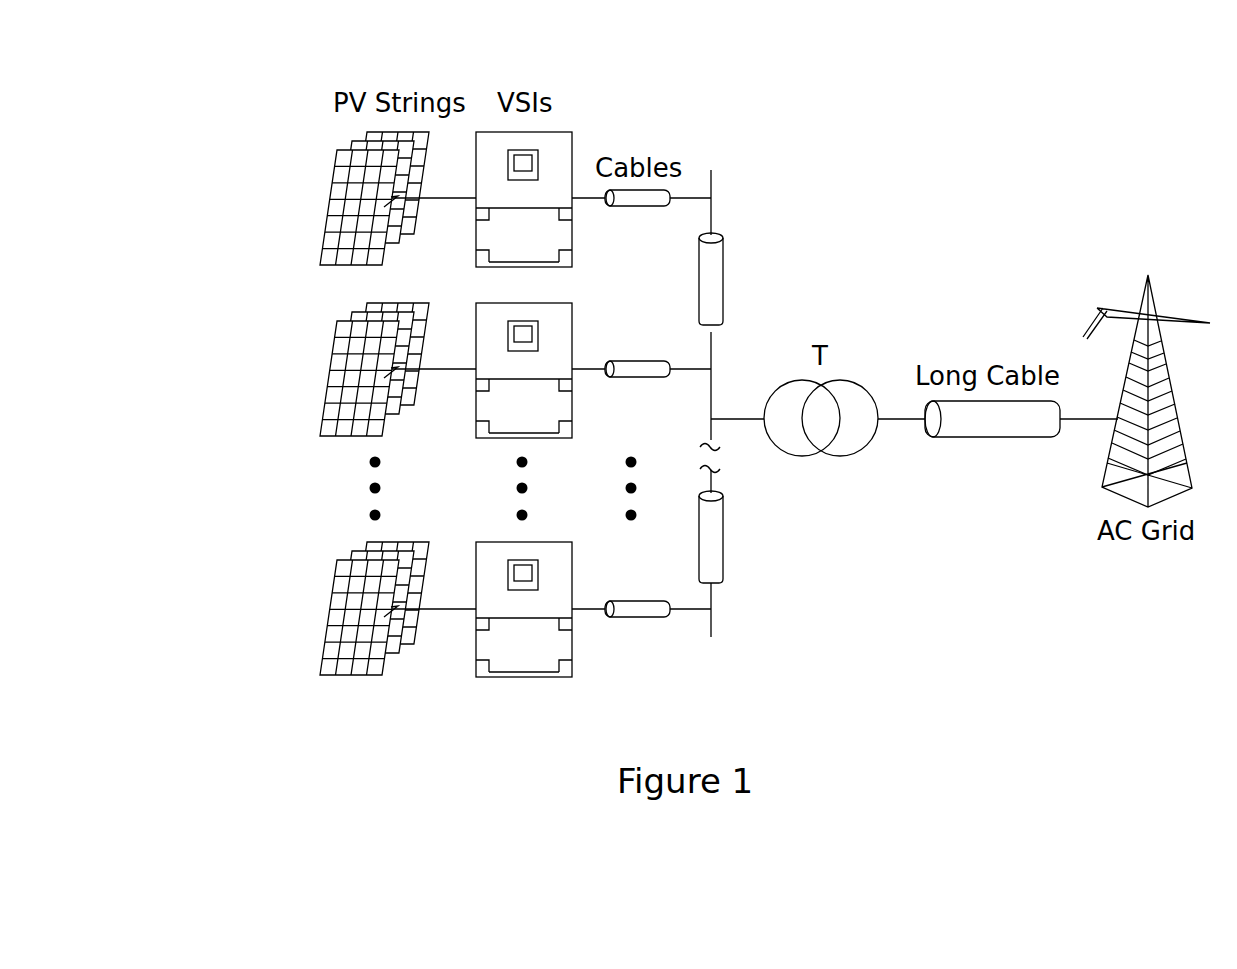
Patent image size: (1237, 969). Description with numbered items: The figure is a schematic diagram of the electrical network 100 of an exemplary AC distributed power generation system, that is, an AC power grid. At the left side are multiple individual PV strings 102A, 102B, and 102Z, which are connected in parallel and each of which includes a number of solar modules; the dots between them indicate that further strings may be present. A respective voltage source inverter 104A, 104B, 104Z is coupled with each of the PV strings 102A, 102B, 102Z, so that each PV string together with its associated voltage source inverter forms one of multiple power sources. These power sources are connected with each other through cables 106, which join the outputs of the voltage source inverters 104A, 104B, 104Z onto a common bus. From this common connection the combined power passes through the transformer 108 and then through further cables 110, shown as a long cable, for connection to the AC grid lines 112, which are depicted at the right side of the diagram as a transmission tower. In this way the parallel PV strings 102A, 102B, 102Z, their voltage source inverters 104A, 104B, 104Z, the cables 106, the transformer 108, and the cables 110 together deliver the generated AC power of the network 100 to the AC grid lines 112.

The network 100 is at (1037, 72).
The PV string 102A is at (278, 198).
The PV string 102B is at (277, 369).
The PV string 102Z is at (277, 608).
The voltage source inverter 104A is at (573, 142).
The voltage source inverter 104B is at (555, 327).
The voltage source inverter 104Z is at (560, 578).
The cables 106 is at (708, 268).
The transformer 108 is at (798, 442).
The cables 110 is at (990, 425).
The AC grid lines 112 is at (1149, 280).